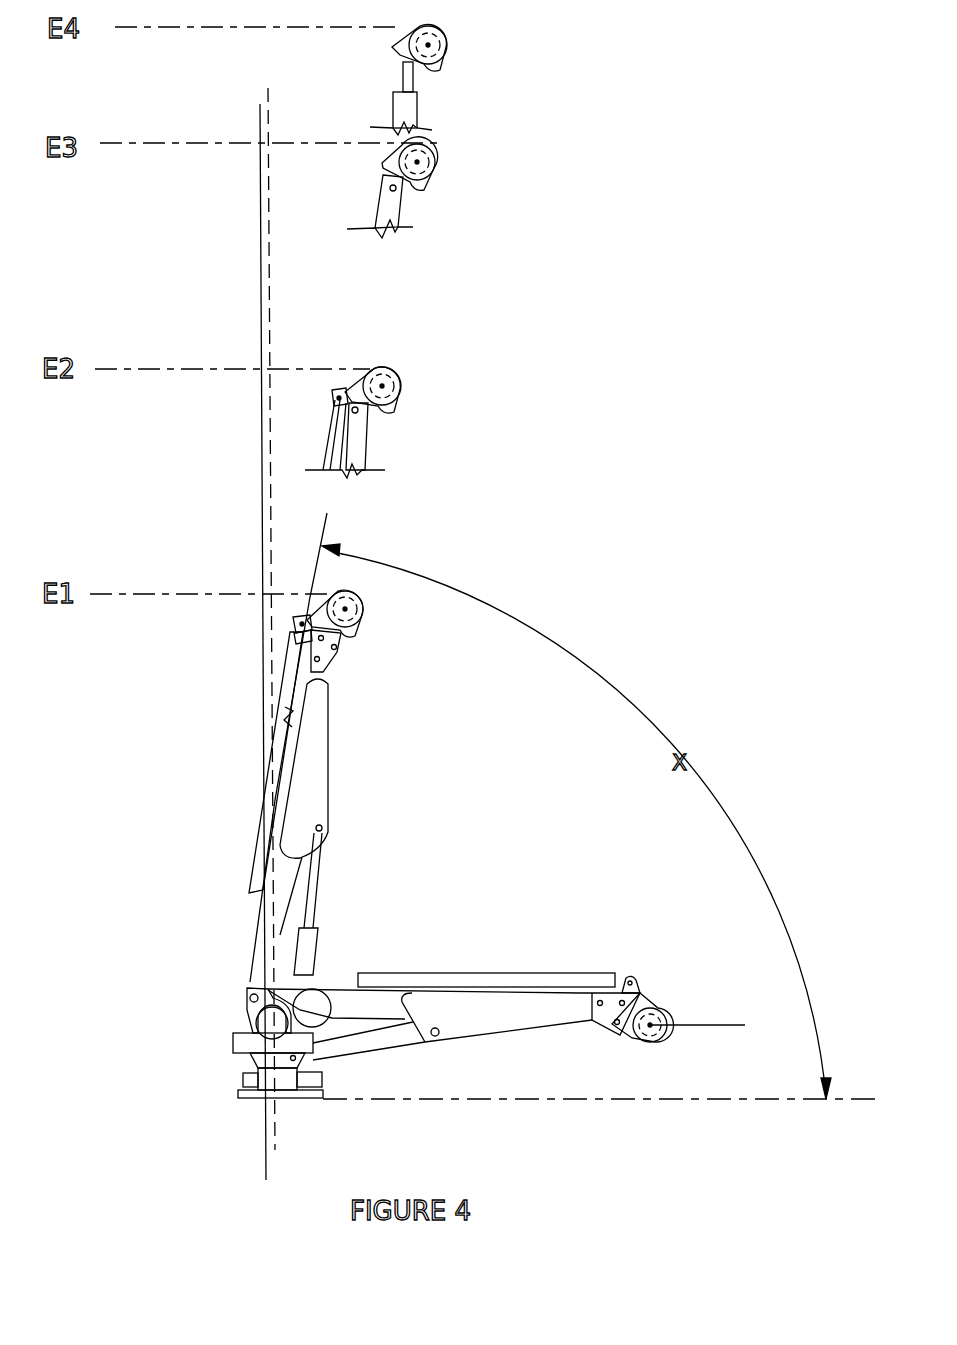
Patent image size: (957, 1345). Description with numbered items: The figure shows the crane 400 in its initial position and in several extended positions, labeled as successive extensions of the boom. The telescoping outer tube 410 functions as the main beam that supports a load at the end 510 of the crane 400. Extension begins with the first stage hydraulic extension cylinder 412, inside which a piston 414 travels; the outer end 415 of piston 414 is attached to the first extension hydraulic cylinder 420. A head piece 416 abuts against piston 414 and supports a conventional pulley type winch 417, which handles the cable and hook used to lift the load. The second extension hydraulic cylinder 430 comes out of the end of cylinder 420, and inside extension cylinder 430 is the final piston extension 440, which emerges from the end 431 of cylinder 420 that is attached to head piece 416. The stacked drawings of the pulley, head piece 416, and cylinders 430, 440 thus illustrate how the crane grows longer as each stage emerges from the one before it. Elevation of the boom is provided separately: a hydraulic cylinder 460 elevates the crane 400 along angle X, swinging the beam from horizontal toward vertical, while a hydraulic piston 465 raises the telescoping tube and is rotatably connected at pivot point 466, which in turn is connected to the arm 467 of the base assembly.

The crane 400 is at (527, 824).
The telescoping outer tube 410 is at (258, 940).
The first stage hydraulic extension cylinder 412 is at (262, 838).
The piston 414 is at (297, 634).
The outer end 415 is at (342, 392).
The head piece 416 is at (440, 66).
The pulley type winch 417 is at (437, 162).
The first extension hydraulic cylinder 420 is at (360, 440).
The second extension hydraulic cylinder 430 is at (398, 207).
The end of cylinder 431 is at (404, 75).
The final piston extension 440 is at (398, 47).
The hydraulic cylinder 460 is at (305, 955).
The hydraulic piston 465 is at (312, 885).
The pivot point 466 is at (324, 827).
The arm 467 is at (315, 755).
The end of the crane 510 is at (640, 1008).